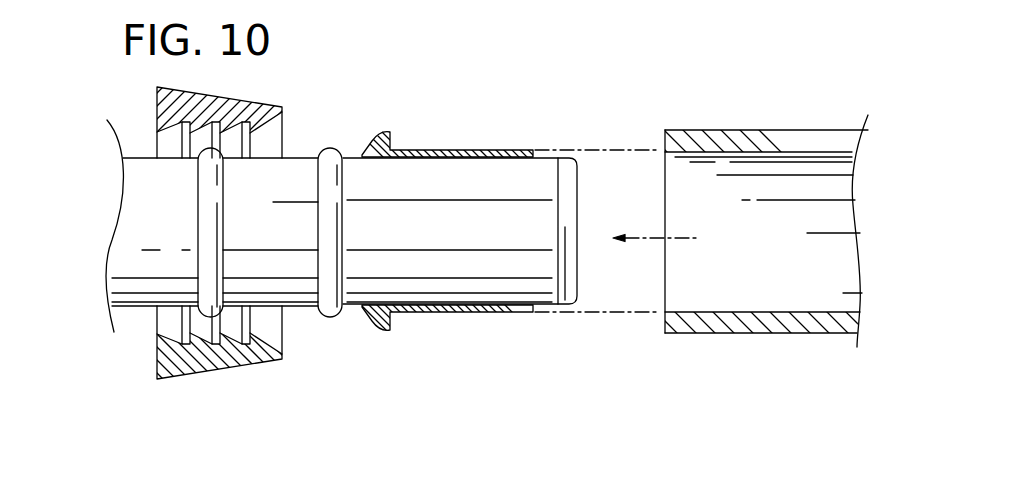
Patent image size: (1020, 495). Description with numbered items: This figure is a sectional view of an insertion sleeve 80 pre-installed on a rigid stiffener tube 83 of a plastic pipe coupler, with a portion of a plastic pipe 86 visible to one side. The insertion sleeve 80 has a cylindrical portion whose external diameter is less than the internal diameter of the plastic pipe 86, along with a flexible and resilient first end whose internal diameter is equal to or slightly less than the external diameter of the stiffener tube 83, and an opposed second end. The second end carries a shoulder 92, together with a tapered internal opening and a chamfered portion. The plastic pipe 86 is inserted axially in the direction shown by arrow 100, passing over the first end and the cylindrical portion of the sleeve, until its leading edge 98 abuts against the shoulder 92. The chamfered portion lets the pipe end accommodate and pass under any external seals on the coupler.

The insertion sleeve 80 is at (338, 234).
The rigid stiffener tube 83 is at (476, 268).
The shoulder 92 is at (391, 146).
The plastic pipe 86 is at (707, 204).
The leading edge of plastic pipe 98 is at (665, 268).
The arrow indicating direction of insertion 100 is at (657, 237).